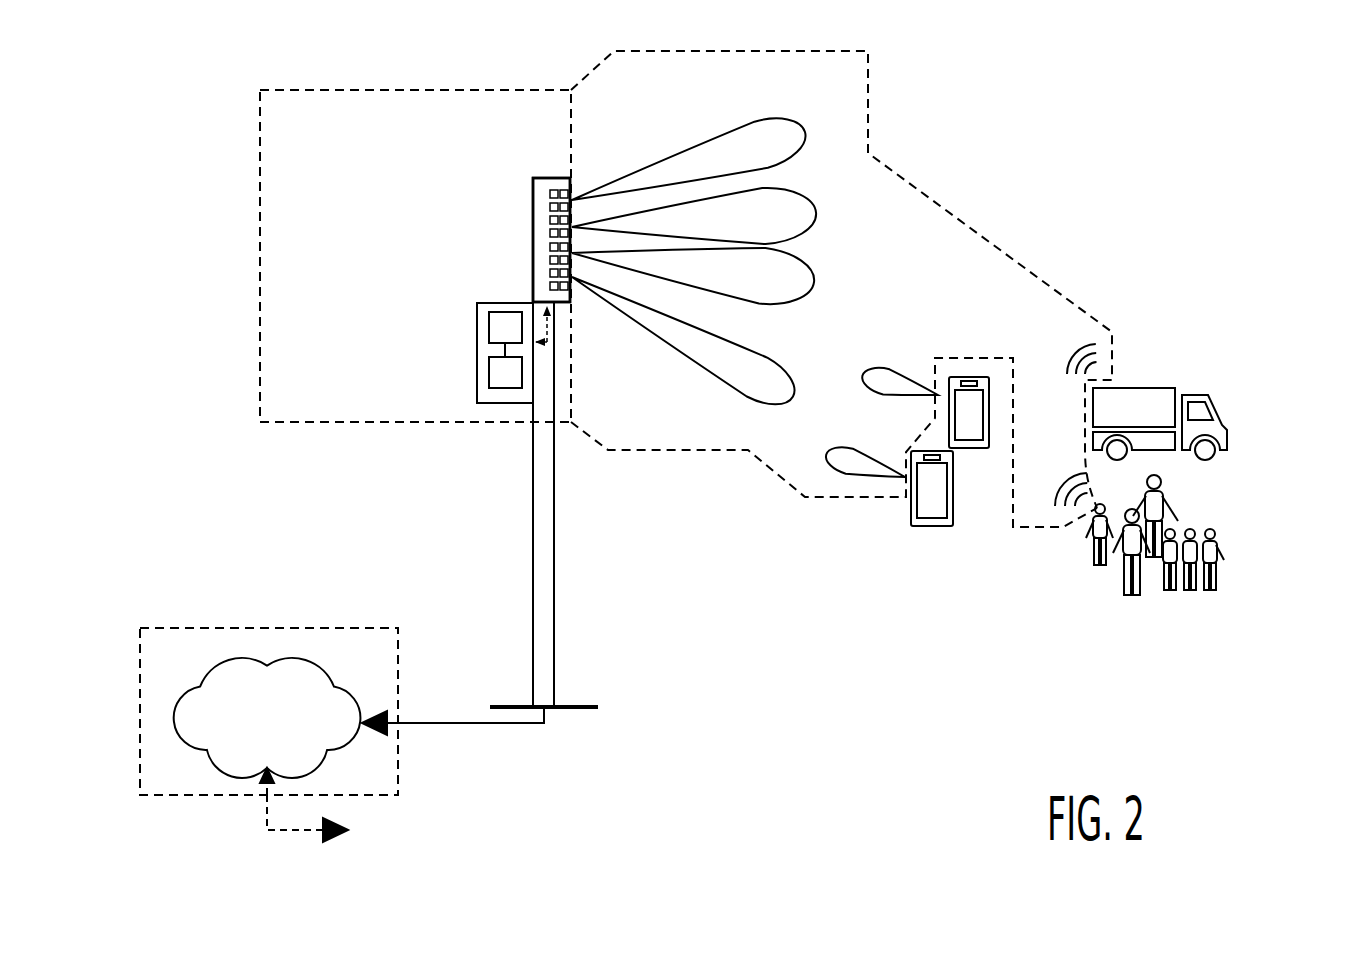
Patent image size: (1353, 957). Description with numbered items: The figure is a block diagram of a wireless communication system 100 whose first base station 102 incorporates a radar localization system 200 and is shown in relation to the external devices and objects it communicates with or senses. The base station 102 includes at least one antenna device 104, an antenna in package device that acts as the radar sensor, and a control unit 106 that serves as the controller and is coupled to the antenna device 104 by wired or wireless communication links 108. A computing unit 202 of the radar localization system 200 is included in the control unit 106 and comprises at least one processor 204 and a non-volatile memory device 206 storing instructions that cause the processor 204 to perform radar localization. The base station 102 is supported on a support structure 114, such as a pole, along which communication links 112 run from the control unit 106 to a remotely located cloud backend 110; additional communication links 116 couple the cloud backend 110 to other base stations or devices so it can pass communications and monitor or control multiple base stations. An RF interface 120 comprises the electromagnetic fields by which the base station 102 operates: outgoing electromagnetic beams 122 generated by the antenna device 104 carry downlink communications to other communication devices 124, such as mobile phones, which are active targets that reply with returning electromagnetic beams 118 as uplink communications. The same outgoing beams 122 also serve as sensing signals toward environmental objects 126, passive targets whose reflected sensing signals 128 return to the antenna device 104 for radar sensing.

The wireless communication system 100 is at (1202, 152).
The first base station 102 is at (258, 133).
The antenna device 104 is at (497, 208).
The control unit 106 is at (458, 341).
The communication links 108 is at (552, 325).
The cloud backend 110 is at (173, 628).
The communication links 112 is at (447, 722).
The support structure 114 is at (556, 648).
The additional communication links 116 is at (282, 832).
The returning electromagnetic beams 118 is at (847, 436).
The radio frequency interface 120 is at (868, 92).
The electromagnetic beams 122 is at (694, 128).
The other communication devices 124 is at (986, 482).
The environmental objects 126 is at (1194, 376).
The reflected sensing signals 128 is at (1050, 462).
The radar localization system 200 is at (476, 242).
The computing unit 202 is at (508, 405).
The processor 204 is at (510, 312).
The memory device 206 is at (489, 380).